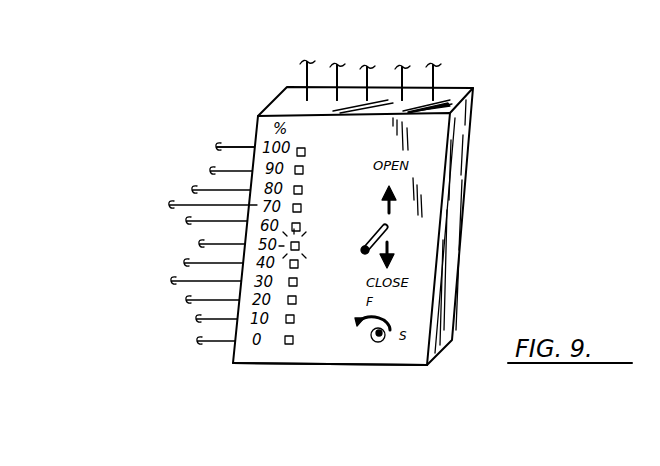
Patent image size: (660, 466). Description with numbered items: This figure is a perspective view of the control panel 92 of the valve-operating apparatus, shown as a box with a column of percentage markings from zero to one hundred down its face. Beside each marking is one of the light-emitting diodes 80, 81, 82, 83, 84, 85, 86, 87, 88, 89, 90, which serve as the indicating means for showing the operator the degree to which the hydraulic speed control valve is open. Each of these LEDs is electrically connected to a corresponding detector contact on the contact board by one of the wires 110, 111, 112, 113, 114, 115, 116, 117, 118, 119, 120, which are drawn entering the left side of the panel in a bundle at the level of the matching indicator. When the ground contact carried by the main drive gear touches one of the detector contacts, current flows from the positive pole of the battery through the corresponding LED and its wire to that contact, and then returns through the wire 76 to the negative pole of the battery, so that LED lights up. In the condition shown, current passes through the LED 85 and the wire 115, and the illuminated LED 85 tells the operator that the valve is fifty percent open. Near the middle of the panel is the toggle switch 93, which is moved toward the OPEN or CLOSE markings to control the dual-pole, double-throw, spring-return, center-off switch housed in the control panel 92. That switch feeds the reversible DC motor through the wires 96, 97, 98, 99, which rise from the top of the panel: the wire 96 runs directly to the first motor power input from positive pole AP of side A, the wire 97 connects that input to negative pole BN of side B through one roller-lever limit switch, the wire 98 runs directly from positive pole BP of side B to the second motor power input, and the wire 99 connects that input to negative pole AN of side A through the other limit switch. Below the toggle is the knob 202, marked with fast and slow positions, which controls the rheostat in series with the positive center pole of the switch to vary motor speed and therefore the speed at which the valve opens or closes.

The wire 76 is at (438, 66).
The light-emitting diode 80 is at (293, 340).
The light-emitting diode 81 is at (294, 319).
The light-emitting diode 82 is at (296, 300).
The light-emitting diode 83 is at (297, 282).
The light-emitting diode 84 is at (298, 264).
The light-emitting diode 85 is at (299, 246).
The light-emitting diode 86 is at (300, 227).
The light-emitting diode 87 is at (301, 208).
The light-emitting diode 88 is at (302, 190).
The light-emitting diode 89 is at (303, 170).
The light-emitting diode 90 is at (305, 152).
The control panel 92 is at (412, 347).
The toggle switch 93 is at (386, 228).
The wire 96 is at (303, 62).
The wire 97 is at (338, 64).
The wire 98 is at (370, 66).
The wire 99 is at (405, 67).
The wire 110 is at (212, 343).
The wire 111 is at (197, 318).
The wire 112 is at (187, 299).
The wire 113 is at (172, 280).
The wire 114 is at (185, 262).
The wire 115 is at (200, 243).
The wire 116 is at (187, 221).
The wire 117 is at (192, 190).
The wire 118 is at (210, 172).
The wire 119 is at (215, 151).
The wire 120 is at (236, 147).
The knob 202 is at (371, 342).